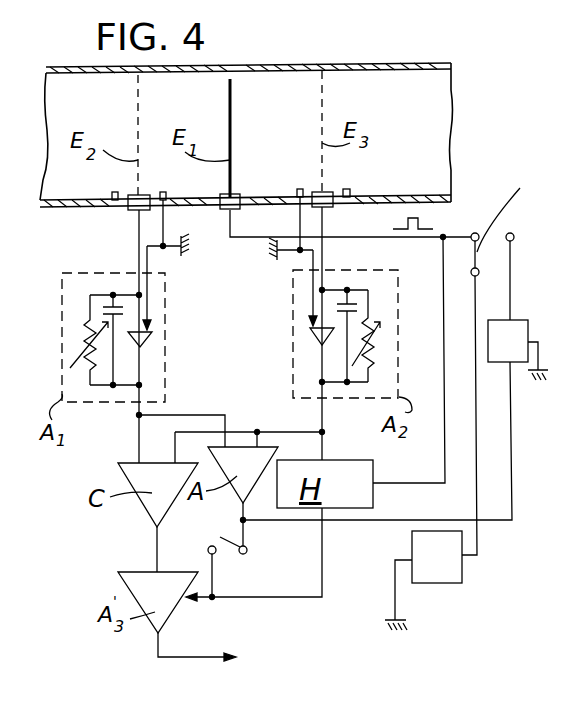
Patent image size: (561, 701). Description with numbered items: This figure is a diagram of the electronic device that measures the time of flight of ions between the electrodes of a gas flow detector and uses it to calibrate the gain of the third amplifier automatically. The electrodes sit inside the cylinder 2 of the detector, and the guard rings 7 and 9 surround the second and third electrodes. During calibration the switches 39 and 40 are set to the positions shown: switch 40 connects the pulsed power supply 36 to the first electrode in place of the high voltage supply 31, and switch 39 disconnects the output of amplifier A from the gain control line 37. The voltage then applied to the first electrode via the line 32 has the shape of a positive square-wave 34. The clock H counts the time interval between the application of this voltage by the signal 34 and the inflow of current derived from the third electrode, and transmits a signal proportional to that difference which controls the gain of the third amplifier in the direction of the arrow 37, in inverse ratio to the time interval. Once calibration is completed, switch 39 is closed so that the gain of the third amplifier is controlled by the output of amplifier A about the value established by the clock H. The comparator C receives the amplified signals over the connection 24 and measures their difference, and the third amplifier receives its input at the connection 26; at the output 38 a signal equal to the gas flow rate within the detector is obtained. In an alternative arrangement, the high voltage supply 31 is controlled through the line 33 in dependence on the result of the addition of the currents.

The cylinder 2 is at (371, 66).
The guard ring 7 is at (166, 165).
The guard ring 9 is at (346, 189).
The connection line to amplifier A3' 24 is at (158, 553).
The input connection of amplifier A3' 26 is at (215, 584).
The high voltage supply 31 is at (508, 301).
The line 32 is at (370, 238).
The line 33 is at (512, 478).
The positive square-wave signal 34 is at (423, 222).
The pulsed power supply 36 is at (437, 557).
The gain control line 37 is at (238, 596).
The output 38 is at (208, 657).
The switch 39 is at (245, 537).
The switch 40 is at (502, 222).